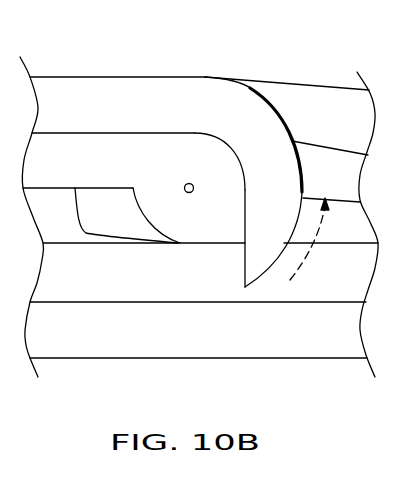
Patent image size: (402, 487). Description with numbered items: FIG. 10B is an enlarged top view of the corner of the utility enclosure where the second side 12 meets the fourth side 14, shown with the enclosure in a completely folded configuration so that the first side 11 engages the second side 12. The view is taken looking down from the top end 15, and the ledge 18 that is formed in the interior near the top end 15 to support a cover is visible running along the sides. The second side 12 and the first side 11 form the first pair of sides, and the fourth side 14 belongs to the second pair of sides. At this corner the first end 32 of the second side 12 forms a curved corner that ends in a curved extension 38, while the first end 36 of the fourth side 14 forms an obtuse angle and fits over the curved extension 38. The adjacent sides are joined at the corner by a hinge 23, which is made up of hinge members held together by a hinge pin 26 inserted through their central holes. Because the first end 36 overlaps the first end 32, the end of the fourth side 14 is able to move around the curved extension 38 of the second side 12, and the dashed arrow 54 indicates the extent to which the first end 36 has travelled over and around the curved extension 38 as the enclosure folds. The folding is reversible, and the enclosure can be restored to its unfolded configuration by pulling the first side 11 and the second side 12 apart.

The first side 11 is at (258, 358).
The second side 12 is at (68, 77).
The fourth side 14 is at (336, 87).
The top end 15 is at (78, 119).
The ledge 18 is at (77, 171).
The hinge 23 is at (204, 224).
The hinge pin 26 is at (188, 182).
The first end of second side 32 is at (273, 159).
The first end of fourth side 36 is at (287, 80).
The curved extension 38 is at (278, 241).
The arrow 54 is at (305, 262).